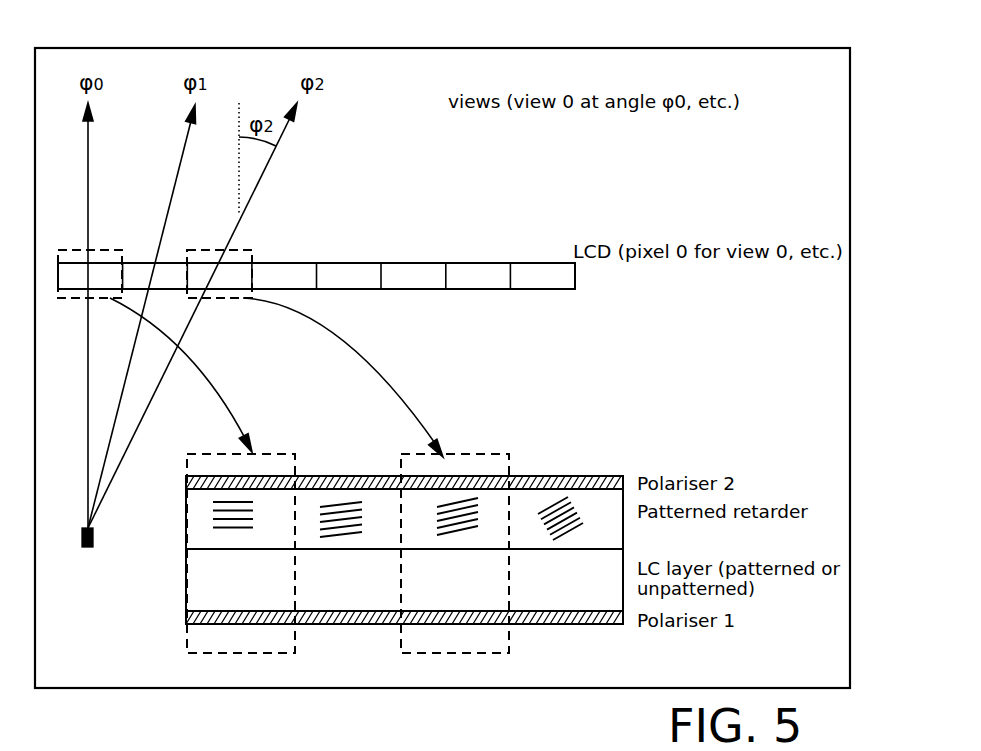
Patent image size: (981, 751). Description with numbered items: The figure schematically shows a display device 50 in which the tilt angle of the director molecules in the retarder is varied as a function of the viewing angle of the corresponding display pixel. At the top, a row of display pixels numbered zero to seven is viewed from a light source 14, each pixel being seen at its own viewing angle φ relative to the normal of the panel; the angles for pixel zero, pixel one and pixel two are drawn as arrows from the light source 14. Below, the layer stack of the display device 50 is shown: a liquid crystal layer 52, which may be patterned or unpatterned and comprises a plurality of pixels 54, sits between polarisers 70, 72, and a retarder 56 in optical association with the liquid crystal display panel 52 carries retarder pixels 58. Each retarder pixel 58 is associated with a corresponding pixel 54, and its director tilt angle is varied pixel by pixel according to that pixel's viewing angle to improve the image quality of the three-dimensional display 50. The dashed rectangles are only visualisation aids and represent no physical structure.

The light source 14 is at (95, 537).
The display device 50 is at (741, 183).
The liquid crystal layer 52 is at (560, 290).
The pixel 54 is at (270, 598).
The retarder 56 is at (186, 503).
The retarder pixel 58 is at (280, 497).
The polariser 70 is at (622, 627).
The polariser 72 is at (615, 477).